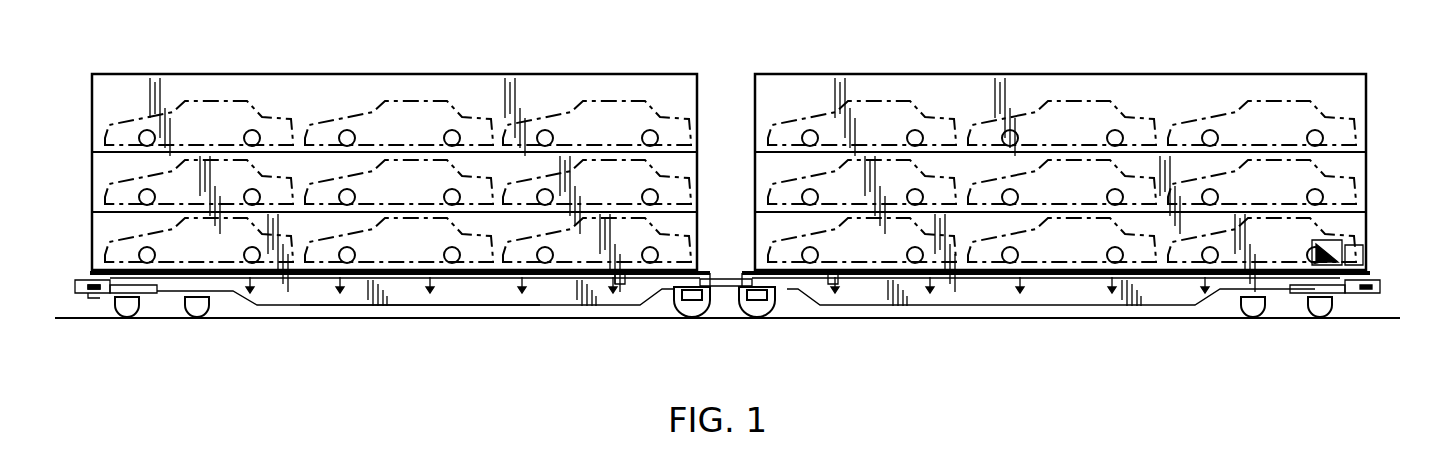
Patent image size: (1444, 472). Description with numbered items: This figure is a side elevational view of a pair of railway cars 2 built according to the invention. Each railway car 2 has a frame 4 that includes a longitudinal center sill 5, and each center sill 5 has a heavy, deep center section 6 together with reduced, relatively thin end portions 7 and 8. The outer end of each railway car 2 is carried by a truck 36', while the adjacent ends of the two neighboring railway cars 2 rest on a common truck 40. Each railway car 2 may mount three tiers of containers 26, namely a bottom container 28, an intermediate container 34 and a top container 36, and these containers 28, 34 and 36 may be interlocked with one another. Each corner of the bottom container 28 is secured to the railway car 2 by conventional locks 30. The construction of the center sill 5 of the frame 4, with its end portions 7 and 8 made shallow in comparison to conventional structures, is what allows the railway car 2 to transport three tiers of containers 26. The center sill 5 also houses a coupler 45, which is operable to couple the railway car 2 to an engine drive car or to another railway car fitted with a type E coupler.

The railway car 2 is at (593, 283).
The frame 4 is at (415, 293).
The center sill 5 is at (528, 292).
The center section 6 is at (352, 292).
The end portion 7 is at (88, 296).
The end portion 8 is at (663, 280).
The containers 26 is at (480, 82).
The bottom container 28 is at (92, 238).
The locks 30 is at (1322, 262).
The intermediate container 34 is at (697, 190).
The top container 36 is at (729, 161).
The truck 36' is at (746, 341).
The common truck 40 is at (698, 300).
The coupler 45 is at (80, 283).